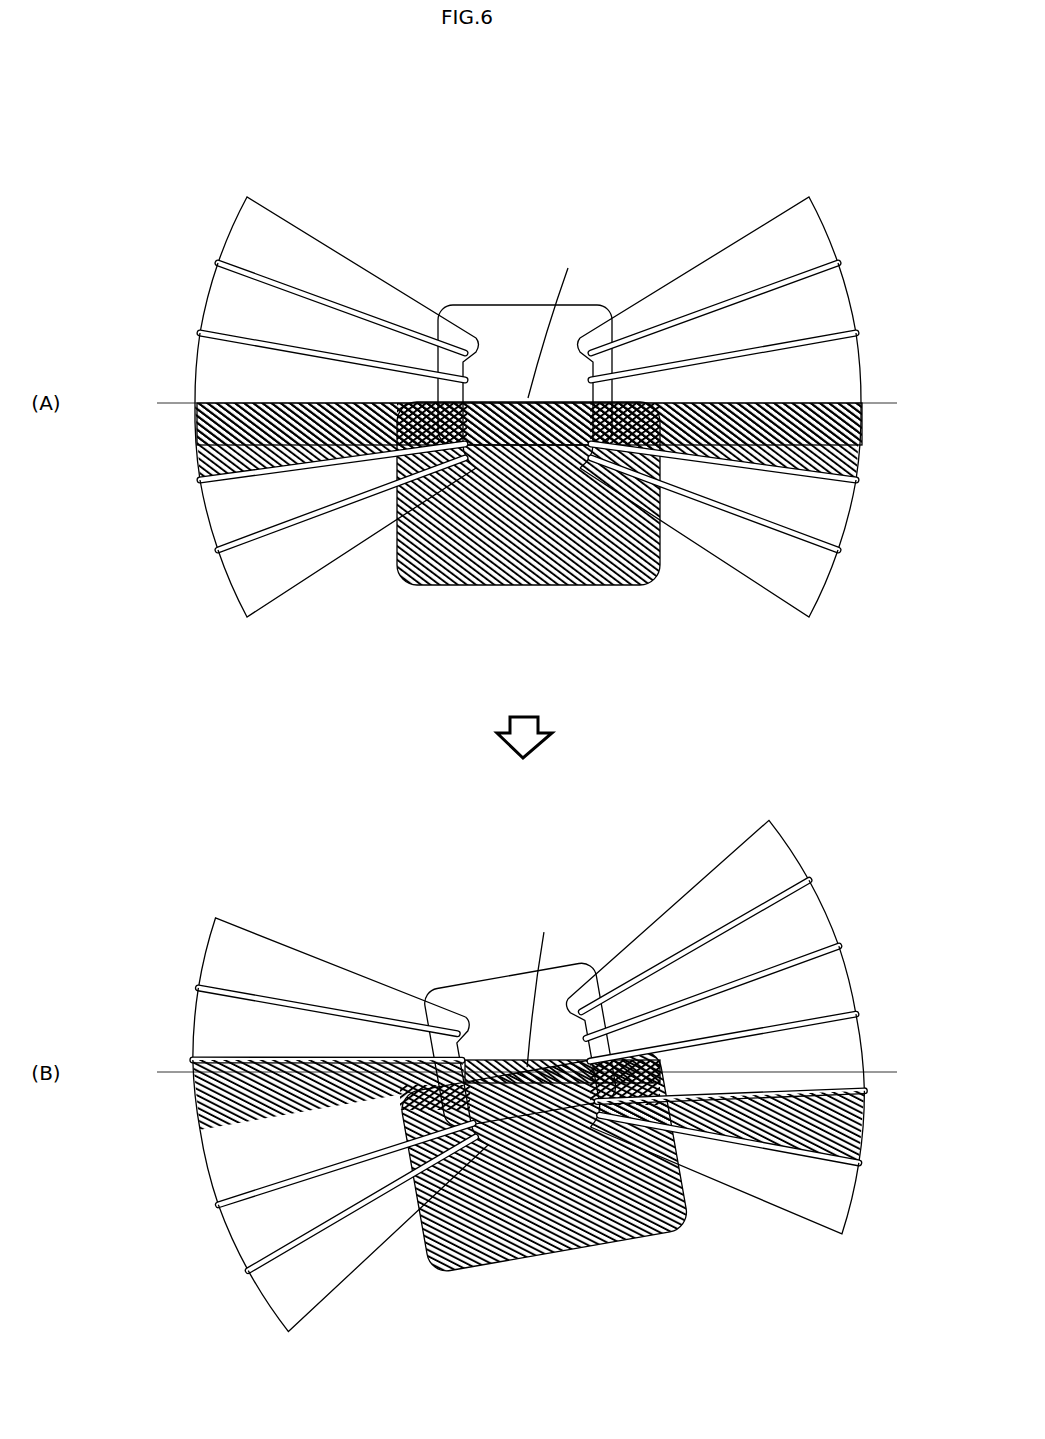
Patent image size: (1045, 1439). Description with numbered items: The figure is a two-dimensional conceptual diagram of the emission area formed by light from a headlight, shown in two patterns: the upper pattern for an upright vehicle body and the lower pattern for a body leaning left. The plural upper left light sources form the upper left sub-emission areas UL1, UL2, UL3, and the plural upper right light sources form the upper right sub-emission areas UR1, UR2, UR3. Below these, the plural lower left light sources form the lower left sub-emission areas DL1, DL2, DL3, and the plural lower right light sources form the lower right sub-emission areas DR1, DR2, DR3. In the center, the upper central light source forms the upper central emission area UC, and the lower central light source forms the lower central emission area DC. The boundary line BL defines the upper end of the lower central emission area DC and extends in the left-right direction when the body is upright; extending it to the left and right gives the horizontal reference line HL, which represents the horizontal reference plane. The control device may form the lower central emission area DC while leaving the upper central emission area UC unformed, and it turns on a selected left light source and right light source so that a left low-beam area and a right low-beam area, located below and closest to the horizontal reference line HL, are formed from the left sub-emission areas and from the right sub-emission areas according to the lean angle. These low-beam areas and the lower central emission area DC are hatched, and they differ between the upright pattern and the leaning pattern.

The upper left sub-emission area UL1 is at (212, 370).
The upper left sub-emission area UL2 is at (222, 303).
The upper left sub-emission area UL3 is at (243, 235).
The upper right sub-emission area UR1 is at (852, 362).
The upper right sub-emission area UR2 is at (837, 298).
The upper right sub-emission area UR3 is at (817, 232).
The lower left sub-emission area DL1 is at (195, 443).
The lower left sub-emission area DL2 is at (223, 510).
The lower left sub-emission area DL3 is at (242, 578).
The lower right sub-emission area DR1 is at (850, 437).
The lower right sub-emission area DR2 is at (837, 503).
The lower right sub-emission area DR3 is at (815, 573).
The upper central emission area UC is at (498, 303).
The lower central emission area DC is at (537, 572).
The boundary line BL is at (546, 652).
The horizontal reference line HL is at (882, 400).